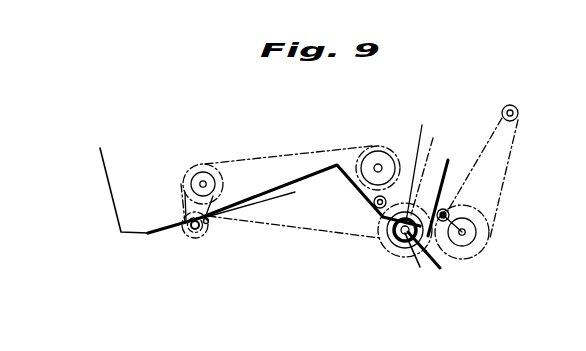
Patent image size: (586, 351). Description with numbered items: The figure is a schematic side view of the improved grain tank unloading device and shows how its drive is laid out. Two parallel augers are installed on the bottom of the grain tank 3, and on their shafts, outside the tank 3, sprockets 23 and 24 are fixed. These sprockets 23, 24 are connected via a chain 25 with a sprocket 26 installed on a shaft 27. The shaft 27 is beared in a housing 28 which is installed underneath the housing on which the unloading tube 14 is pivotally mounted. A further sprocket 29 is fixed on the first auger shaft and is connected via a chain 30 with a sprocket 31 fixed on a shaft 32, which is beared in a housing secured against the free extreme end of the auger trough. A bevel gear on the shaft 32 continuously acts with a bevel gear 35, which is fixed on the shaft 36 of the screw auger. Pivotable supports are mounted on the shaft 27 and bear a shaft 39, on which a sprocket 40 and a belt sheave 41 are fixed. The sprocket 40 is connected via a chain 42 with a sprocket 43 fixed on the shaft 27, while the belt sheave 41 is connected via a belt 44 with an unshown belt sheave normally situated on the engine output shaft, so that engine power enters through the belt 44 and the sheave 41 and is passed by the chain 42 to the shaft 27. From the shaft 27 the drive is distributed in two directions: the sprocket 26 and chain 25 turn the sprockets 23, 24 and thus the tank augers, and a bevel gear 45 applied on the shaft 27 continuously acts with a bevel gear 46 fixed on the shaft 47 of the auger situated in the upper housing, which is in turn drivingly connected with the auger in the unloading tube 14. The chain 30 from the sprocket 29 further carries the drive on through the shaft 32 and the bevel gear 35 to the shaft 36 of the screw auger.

The grain tank 3 is at (112, 177).
The unloading tube 14 is at (432, 178).
The sprocket 23 is at (191, 174).
The sprocket 24 is at (395, 146).
The chain 25 is at (258, 157).
The sprocket 26 is at (434, 258).
The shaft 27 is at (407, 244).
The housing 28 is at (380, 230).
The sprocket 29 is at (193, 180).
The chain 30 is at (178, 203).
The sprocket 31 is at (191, 233).
The shaft 32 is at (199, 232).
The bevel gear 35 is at (208, 223).
The shaft 36 is at (268, 196).
The shaft 39 is at (463, 229).
The sprocket 40 is at (474, 237).
The belt sheave 41 is at (497, 208).
The chain 42 is at (433, 270).
The sprocket 43 is at (384, 245).
The belt 44 is at (513, 160).
The bevel gear 45 is at (422, 163).
The bevel gear 46 is at (409, 241).
The shaft 47 is at (435, 136).